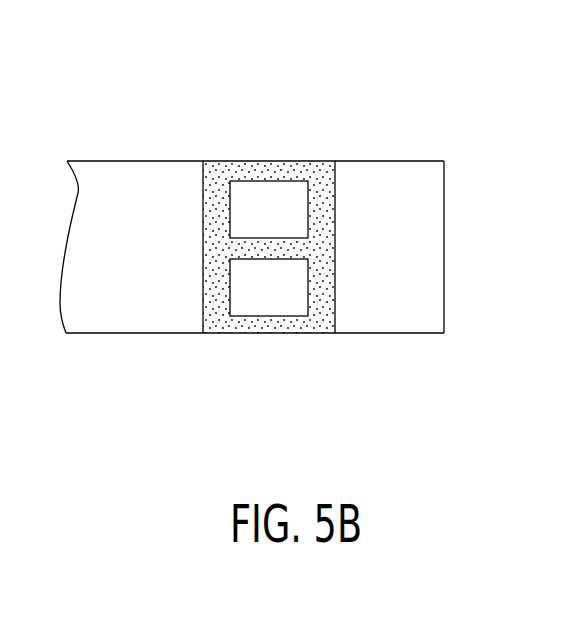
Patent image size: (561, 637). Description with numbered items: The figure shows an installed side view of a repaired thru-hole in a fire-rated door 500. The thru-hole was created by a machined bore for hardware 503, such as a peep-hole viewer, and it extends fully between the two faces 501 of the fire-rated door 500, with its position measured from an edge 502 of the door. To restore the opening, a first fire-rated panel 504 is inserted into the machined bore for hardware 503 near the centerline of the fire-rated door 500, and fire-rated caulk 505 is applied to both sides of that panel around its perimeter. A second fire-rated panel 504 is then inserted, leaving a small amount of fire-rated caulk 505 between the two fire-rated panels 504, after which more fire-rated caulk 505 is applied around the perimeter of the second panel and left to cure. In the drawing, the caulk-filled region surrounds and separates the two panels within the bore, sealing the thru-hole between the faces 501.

The fire-rated door 500 is at (454, 144).
The faces 501 is at (133, 158).
The edge 502 is at (448, 243).
The machined bore for hardware 503 is at (322, 172).
The fire-rated panels 504 is at (263, 195).
The fire-rated caulk 505 is at (218, 180).